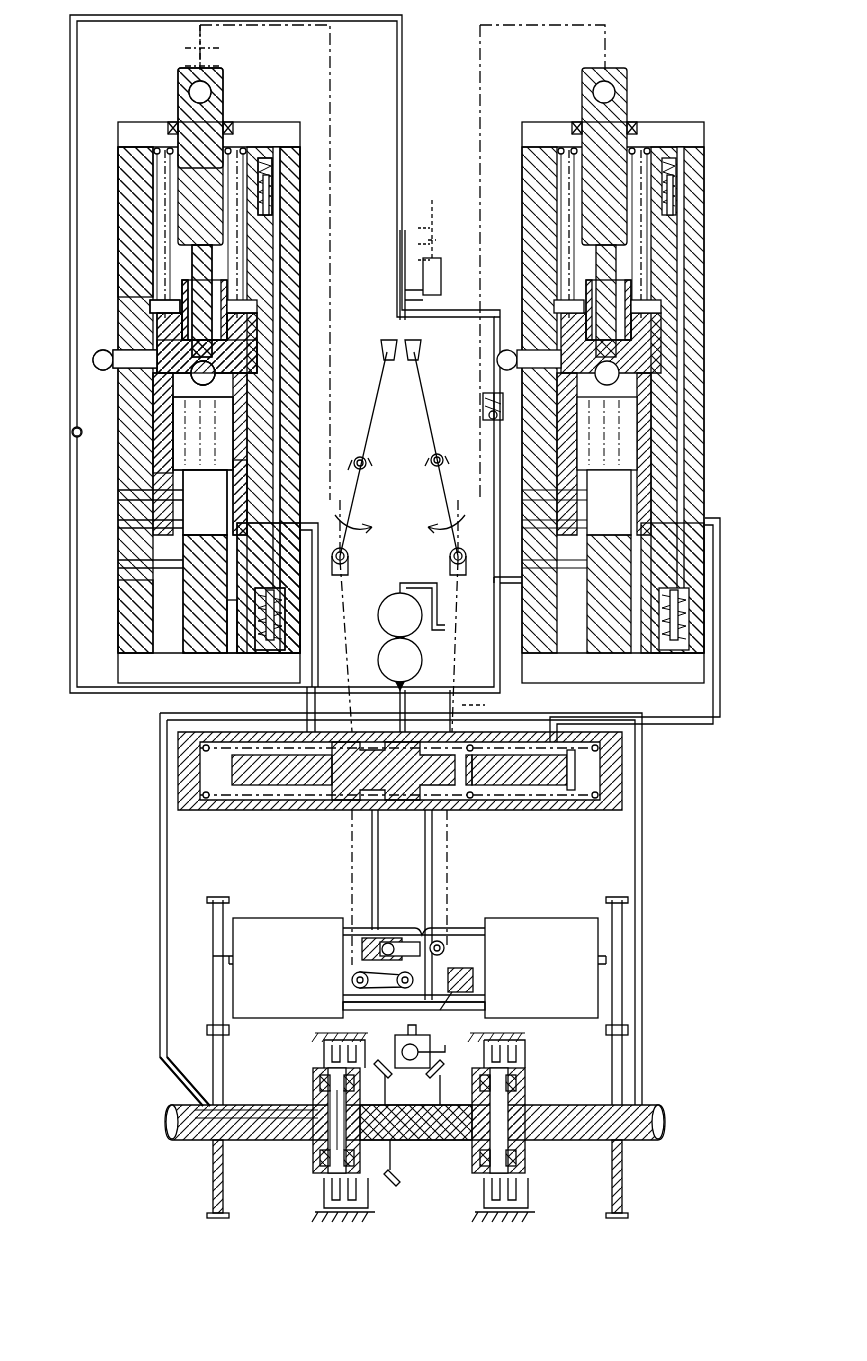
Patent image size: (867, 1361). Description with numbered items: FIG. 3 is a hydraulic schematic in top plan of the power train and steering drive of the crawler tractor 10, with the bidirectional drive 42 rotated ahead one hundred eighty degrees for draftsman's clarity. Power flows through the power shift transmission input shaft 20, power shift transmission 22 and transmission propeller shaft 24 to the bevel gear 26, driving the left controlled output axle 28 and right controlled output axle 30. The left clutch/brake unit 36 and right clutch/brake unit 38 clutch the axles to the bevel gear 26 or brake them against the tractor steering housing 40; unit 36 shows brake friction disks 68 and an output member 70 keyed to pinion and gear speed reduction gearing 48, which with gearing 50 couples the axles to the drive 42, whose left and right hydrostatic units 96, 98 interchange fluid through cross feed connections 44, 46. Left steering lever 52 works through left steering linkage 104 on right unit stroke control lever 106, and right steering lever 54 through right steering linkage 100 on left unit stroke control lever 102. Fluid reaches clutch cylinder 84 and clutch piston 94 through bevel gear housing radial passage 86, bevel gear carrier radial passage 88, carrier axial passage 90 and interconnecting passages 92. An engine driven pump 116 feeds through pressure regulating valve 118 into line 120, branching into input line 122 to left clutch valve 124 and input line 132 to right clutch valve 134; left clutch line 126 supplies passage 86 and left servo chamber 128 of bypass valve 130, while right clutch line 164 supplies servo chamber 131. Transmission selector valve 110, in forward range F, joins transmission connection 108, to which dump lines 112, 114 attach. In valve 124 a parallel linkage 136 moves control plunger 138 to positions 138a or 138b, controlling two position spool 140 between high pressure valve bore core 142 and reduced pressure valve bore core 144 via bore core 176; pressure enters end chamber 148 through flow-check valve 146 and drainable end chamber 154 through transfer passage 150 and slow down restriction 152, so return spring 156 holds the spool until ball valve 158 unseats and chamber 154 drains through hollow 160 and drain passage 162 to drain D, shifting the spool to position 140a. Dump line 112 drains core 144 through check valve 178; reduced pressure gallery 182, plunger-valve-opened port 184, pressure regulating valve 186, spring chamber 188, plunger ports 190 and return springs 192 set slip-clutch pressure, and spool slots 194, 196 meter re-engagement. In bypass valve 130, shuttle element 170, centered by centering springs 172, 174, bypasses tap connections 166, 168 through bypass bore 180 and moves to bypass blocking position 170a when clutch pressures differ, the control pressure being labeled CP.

The crawler tractor 10 is at (363, 161).
The power shift transmission input shaft 20 is at (449, 952).
The power shift transmission 22 is at (430, 1012).
The transmission propeller shaft 24 is at (420, 1068).
The bevel gear 26 is at (400, 1095).
The left controlled output axle 28 is at (178, 1140).
The right controlled output axle 30 is at (655, 1140).
The left clutch/brake unit 36 is at (372, 1190).
The right clutch/brake unit 38 is at (534, 1065).
The tractor steering housing 40 is at (335, 1032).
The bidirectional drive 42 is at (320, 890).
The cross feed connection 44 is at (458, 928).
The cross feed connection 46 is at (385, 1000).
The pinion and gear speed reduction gearing 48 is at (228, 1040).
The pinion and gear speed reduction gearing 50 is at (598, 1055).
The left steering lever 52 is at (370, 425).
The right steering lever 54 is at (428, 425).
The brake friction disks 68 is at (415, 1122).
The output member 70 is at (318, 1150).
The clutch cylinder 84 is at (322, 1075).
The bevel gear housing radial passage 86 is at (185, 1085).
The bevel gear carrier radial passage 88 is at (172, 1110).
The carrier axial passage 90 is at (262, 1108).
The interconnecting passages 92 is at (325, 1100).
The clutch piston 94 is at (320, 1185).
The left hydrostatic unit 96 is at (248, 925).
The right hydrostatic unit 98 is at (575, 925).
The right steering linkage 100 is at (445, 715).
The left unit stroke control lever 102 is at (405, 938).
The left steering linkage 104 is at (372, 688).
The right unit stroke control lever 106 is at (368, 978).
The transmission connection 108 is at (397, 310).
The transmission selector valve 110 is at (400, 300).
The dump line 112 is at (398, 262).
The dump line 114 is at (445, 340).
The engine driven pump 116 is at (385, 604).
The pressure regulating valve 118 is at (383, 657).
The line 120 is at (348, 688).
The input line 122 is at (85, 690).
The left clutch valve 124 is at (130, 122).
The left clutch line 126 is at (165, 713).
The left servo chamber 128 is at (222, 800).
The bypass valve 130 is at (398, 730).
The servo chamber 131 is at (575, 795).
The input line 132 is at (470, 690).
The right clutch valve 134 is at (548, 122).
The parallel linkage 136 is at (305, 30).
The control plunger 138 is at (180, 72).
The broken line position of control plunger 138a is at (222, 68).
The broken line position of plunger 138b is at (222, 50).
The two position spool 140 is at (195, 642).
The second position of spool 140a is at (170, 400).
The high pressure valve bore core 142 is at (245, 565).
The reduced pressure valve bore core 144 is at (232, 520).
The flow-check valve 146 is at (262, 650).
The end chamber 148 is at (232, 652).
The transfer passage 150 is at (172, 492).
The slow down restriction 152 is at (178, 410).
The drainable end chamber 154 is at (200, 470).
The return spring 156 is at (200, 522).
The ball valve 158 is at (225, 378).
The hollow 160 is at (185, 298).
The drain passage 162 is at (168, 342).
The right clutch line 164 is at (700, 720).
The tap connection 166 is at (372, 828).
The tap connection 168 is at (425, 865).
The shuttle element 170 is at (525, 790).
The bypass blocking position of shuttle 170a is at (575, 740).
The centering spring 172 is at (392, 735).
The centering spring 174 is at (480, 795).
The bore core 176 is at (165, 548).
The check valve 178 is at (77, 432).
The bypass bore 180 is at (382, 790).
The reduced pressure gallery 182 is at (300, 292).
The plunger-valve-opened port 184 is at (257, 340).
The pressure regulating valve 186 is at (272, 188).
The spring chamber 188 is at (175, 180).
The plunger ports 190 is at (190, 315).
The return springs 192 is at (178, 330).
The spool slot 194 is at (178, 598).
The spool slot 196 is at (172, 508).
The drain D is at (125, 346).
The forward range F is at (417, 231).
The control pressure CP is at (422, 700).